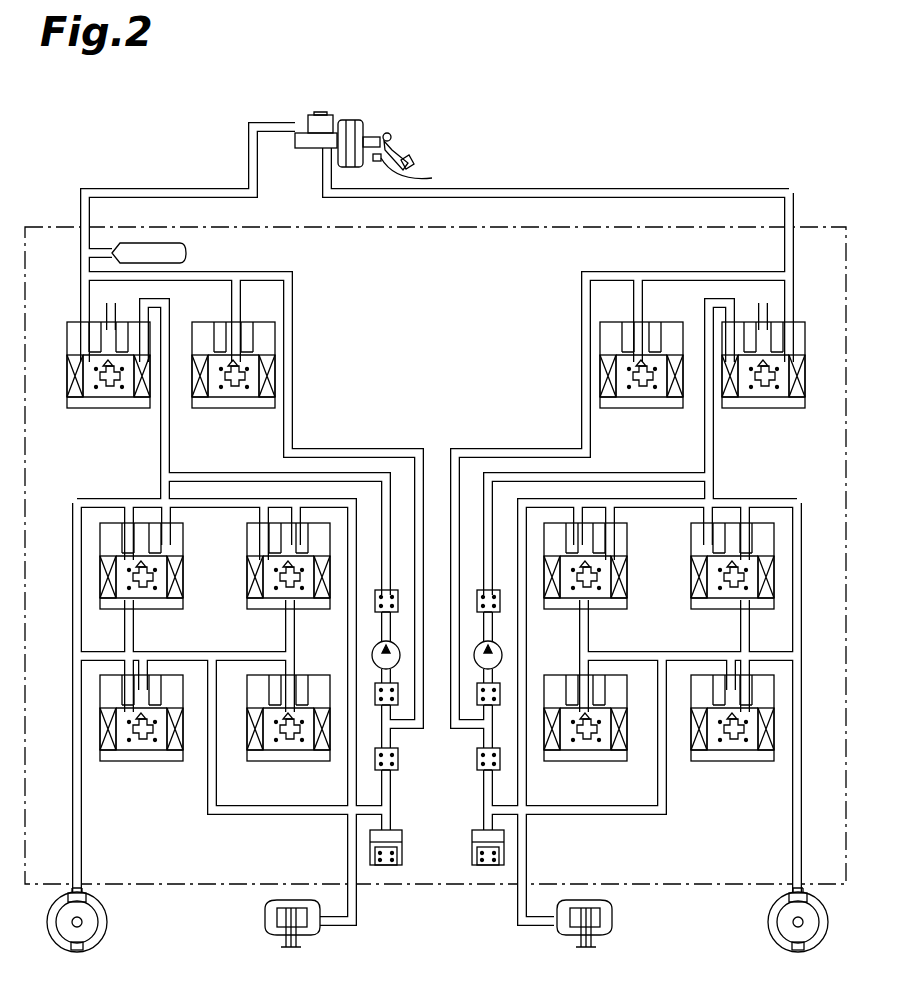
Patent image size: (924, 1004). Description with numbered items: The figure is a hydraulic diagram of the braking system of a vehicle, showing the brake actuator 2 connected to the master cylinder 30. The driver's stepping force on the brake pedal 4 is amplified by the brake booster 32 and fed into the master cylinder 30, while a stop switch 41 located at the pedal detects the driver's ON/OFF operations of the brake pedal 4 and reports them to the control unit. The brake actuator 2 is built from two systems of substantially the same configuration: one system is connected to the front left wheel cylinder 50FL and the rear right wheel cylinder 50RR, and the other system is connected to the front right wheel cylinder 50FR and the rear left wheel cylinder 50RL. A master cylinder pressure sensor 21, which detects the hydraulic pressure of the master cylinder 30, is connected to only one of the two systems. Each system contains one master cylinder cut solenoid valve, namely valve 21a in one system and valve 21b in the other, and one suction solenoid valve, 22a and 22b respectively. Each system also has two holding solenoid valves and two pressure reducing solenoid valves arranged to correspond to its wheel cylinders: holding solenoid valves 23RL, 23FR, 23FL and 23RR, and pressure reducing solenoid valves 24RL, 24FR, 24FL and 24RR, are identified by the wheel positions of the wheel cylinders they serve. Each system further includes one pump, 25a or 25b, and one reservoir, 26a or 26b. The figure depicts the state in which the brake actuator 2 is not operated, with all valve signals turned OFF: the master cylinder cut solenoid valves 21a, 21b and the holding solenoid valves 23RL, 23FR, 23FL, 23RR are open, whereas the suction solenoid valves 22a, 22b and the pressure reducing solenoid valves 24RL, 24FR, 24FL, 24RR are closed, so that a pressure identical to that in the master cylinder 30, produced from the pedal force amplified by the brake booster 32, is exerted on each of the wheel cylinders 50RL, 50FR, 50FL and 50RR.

The brake actuator 2 is at (826, 227).
The brake pedal 4 is at (395, 142).
The master cylinder pressure sensor 21 is at (187, 253).
The master cylinder cut solenoid valve 21a is at (765, 408).
The master cylinder cut solenoid valve 21b is at (120, 408).
The suction solenoid valve 22a is at (645, 408).
The suction solenoid valve 22b is at (240, 408).
The holding solenoid valve 23RL is at (138, 609).
The holding solenoid valve 23FR is at (285, 609).
The holding solenoid valve 23FL is at (585, 609).
The holding solenoid valve 23RR is at (735, 609).
The pressure reducing solenoid valve 24RL is at (140, 761).
The pressure reducing solenoid valve 24FR is at (288, 761).
The pressure reducing solenoid valve 24FL is at (585, 761).
The pressure reducing solenoid valve 24RR is at (735, 761).
The pump 25a is at (478, 670).
The pump 25b is at (395, 670).
The reservoir 26a is at (488, 866).
The reservoir 26b is at (386, 866).
The master cylinder 30 is at (305, 150).
The brake booster 32 is at (352, 120).
The stop switch 41 is at (417, 172).
The rear left wheel cylinder 50RL is at (77, 953).
The front right wheel cylinder 50FR is at (300, 935).
The front left wheel cylinder 50FL is at (570, 935).
The rear right wheel cylinder 50RR is at (798, 953).